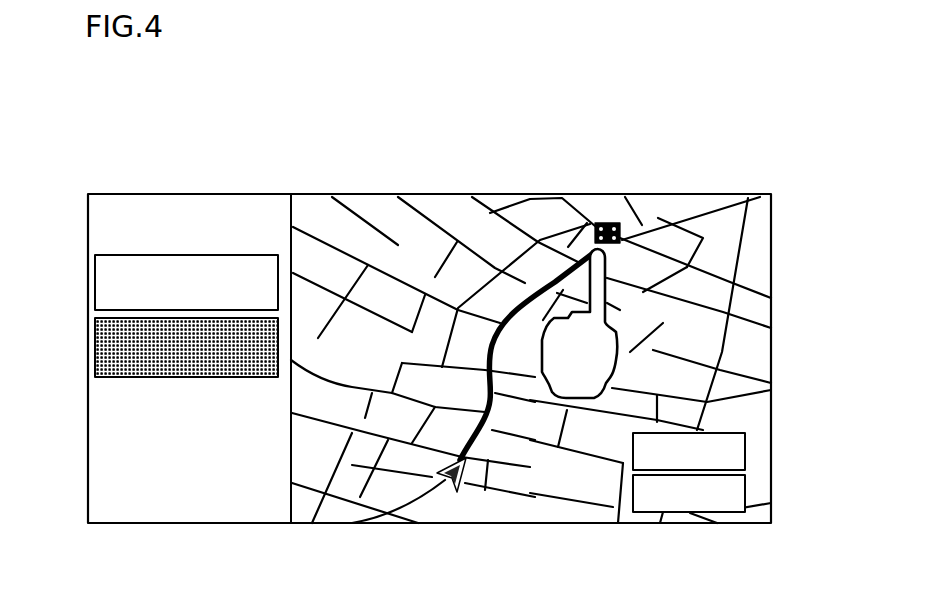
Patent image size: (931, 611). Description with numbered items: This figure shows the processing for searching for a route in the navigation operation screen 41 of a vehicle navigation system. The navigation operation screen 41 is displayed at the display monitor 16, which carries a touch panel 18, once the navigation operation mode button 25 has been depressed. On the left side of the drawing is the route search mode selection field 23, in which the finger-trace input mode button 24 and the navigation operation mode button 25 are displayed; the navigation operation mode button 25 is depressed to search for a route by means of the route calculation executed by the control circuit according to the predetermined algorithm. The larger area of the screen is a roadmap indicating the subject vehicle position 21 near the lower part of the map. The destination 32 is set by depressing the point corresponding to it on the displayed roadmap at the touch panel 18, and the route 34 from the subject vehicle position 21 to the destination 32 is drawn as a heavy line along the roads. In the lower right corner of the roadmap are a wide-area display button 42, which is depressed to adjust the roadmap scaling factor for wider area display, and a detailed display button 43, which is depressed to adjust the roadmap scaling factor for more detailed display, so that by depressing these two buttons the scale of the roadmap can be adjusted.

The display monitor 16 is at (429, 315).
The touch panel 18 is at (687, 194).
The subject vehicle position 21 is at (458, 490).
The route search mode selection field 23 is at (193, 194).
The finger-trace input mode button 24 is at (88, 290).
The navigation operation mode button 25 is at (88, 345).
The destination 32 is at (618, 223).
The route 34 is at (537, 290).
The navigation operation screen 41 is at (510, 197).
The wide-area display button 42 is at (740, 452).
The detailed display button 43 is at (740, 494).